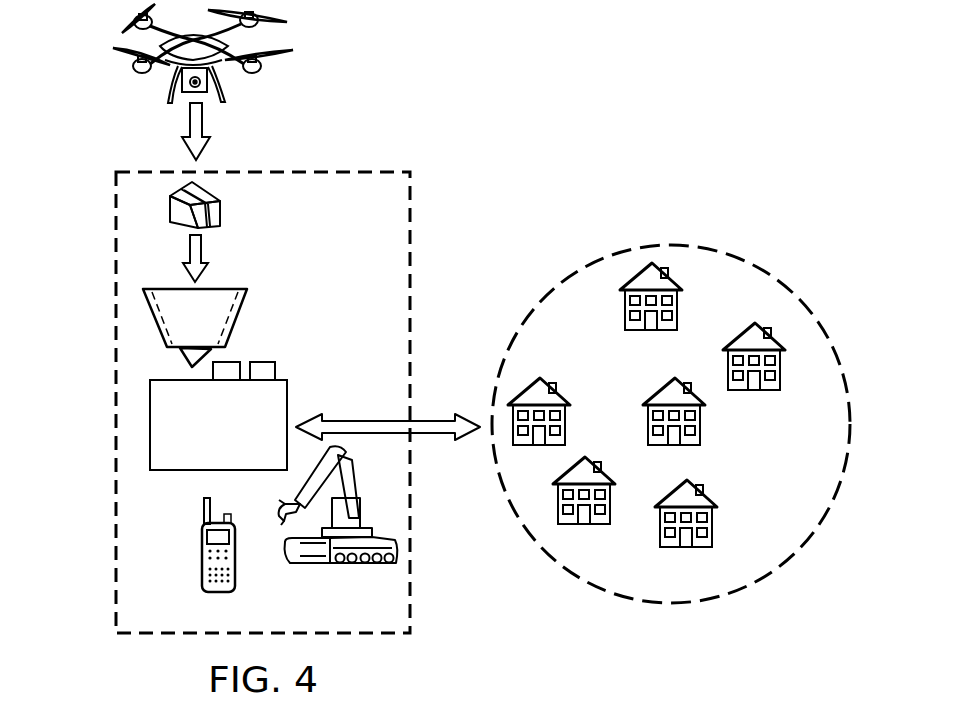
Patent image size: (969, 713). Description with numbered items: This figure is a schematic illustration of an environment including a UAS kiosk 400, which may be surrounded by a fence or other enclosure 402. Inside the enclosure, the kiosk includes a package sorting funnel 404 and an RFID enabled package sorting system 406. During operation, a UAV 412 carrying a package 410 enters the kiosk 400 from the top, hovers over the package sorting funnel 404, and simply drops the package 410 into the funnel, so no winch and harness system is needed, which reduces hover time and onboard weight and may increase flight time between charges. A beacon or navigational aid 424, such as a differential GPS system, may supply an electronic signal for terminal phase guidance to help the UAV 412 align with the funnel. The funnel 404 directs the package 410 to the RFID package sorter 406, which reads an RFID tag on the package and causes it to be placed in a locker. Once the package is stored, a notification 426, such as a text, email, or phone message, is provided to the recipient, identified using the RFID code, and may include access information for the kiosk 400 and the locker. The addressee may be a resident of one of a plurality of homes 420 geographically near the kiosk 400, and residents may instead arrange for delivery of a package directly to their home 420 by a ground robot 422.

The UAS kiosk 400 is at (618, 90).
The fence 402 is at (106, 360).
The package sorting funnel 404 is at (239, 310).
The RFID enabled package sorting system 406 is at (287, 395).
The package 410 is at (222, 203).
The UAV 412 is at (166, 89).
The homes 420 is at (557, 392).
The ground robot 422 is at (357, 568).
The beacon or navigational aid 424 is at (200, 561).
The notification 426 is at (433, 417).